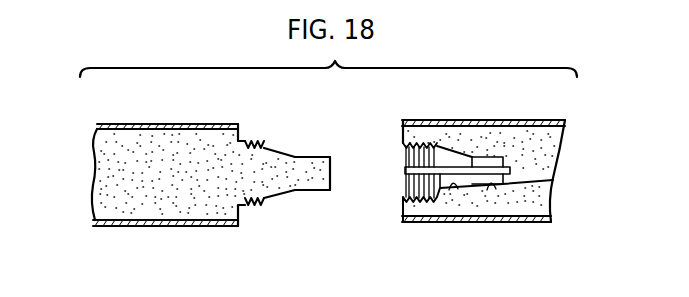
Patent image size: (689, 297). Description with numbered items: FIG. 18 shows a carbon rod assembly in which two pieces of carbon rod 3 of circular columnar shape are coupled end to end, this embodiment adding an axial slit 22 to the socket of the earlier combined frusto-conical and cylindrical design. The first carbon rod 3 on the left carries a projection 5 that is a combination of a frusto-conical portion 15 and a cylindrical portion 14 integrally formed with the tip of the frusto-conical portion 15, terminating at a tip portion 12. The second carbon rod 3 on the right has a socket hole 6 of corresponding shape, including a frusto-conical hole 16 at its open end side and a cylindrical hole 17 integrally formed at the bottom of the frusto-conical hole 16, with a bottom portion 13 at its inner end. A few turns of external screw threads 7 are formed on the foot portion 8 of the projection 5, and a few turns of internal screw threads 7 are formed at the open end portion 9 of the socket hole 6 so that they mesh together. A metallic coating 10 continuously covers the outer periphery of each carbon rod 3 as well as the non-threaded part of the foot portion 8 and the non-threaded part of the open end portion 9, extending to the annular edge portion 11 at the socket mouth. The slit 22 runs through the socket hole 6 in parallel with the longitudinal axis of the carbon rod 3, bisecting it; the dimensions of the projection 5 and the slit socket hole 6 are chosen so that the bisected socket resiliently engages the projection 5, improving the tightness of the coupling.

The carbon rod 3 is at (146, 135).
The projection 5 is at (292, 163).
The socket hole 6 is at (440, 162).
The screw threads 7 is at (260, 142).
The foot portion 8 is at (250, 137).
The open end portion 9 is at (404, 145).
The metallic coating 10 is at (172, 227).
The annular edge portion 11 is at (403, 125).
The tip portion 12 is at (334, 172).
The bottom portion 13 is at (553, 180).
The cylindrical portion 14 is at (310, 193).
The frusto-conical portion 15 is at (278, 198).
The frusto-conical hole 16 is at (453, 190).
The cylindrical hole 17 is at (490, 190).
The slit 22 is at (487, 170).